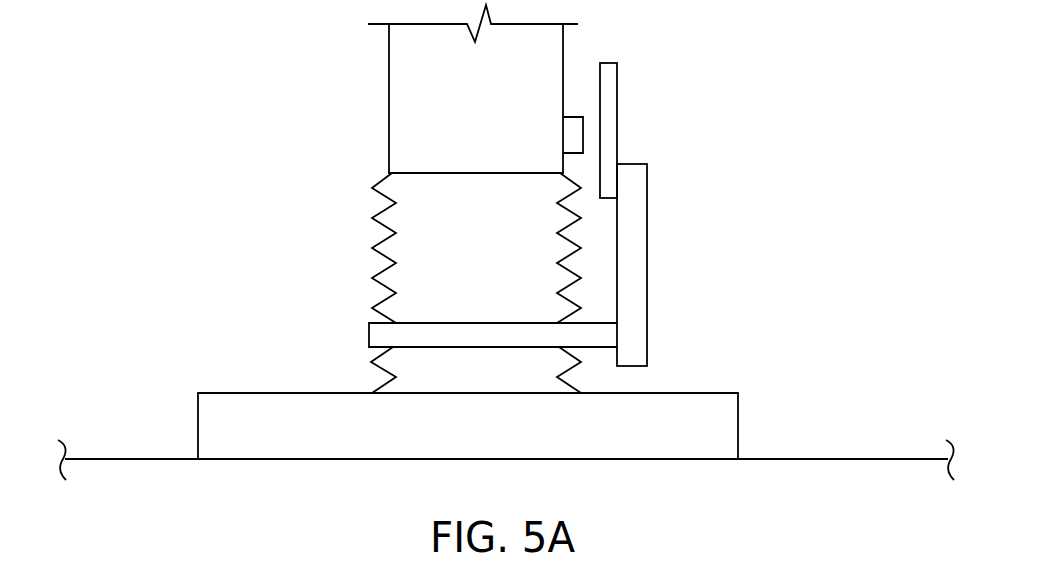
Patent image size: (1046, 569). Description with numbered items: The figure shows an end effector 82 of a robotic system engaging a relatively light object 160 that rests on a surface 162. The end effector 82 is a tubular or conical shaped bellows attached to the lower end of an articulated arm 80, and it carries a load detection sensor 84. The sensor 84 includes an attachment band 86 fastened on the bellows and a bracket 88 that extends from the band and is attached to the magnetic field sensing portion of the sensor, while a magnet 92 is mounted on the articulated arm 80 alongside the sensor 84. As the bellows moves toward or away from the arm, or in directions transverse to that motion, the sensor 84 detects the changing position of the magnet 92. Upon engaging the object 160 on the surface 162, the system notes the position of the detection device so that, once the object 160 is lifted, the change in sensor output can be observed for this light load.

The articulated arm 80 is at (389, 93).
The end effector 82 is at (372, 218).
The sensor 84 is at (617, 120).
The attachment band 86 is at (368, 337).
The bracket 88 is at (647, 318).
The magnet 92 is at (563, 135).
The object 160 is at (222, 392).
The surface 162 is at (134, 458).